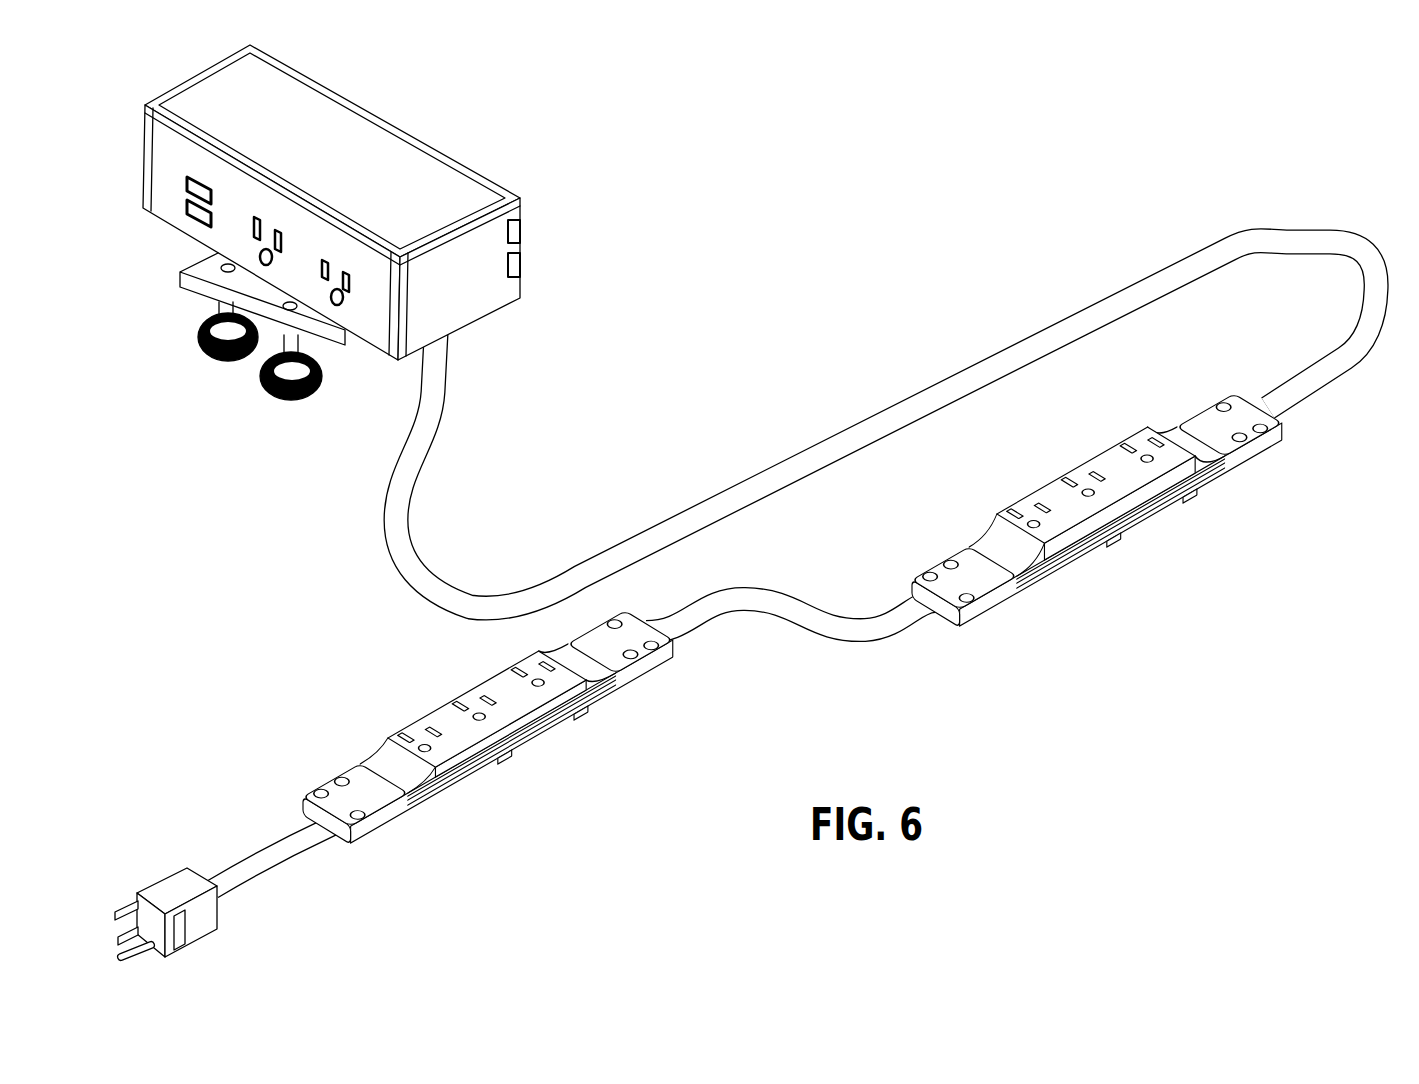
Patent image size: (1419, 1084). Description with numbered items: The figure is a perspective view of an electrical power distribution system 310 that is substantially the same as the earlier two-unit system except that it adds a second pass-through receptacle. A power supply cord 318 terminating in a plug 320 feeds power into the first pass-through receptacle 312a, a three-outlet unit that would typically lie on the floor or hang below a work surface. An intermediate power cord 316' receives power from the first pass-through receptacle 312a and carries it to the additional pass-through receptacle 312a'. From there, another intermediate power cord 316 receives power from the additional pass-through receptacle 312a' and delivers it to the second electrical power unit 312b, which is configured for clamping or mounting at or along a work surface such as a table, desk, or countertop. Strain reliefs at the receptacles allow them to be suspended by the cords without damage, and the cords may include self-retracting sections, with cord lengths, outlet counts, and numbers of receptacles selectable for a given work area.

The electrical power distribution system 310 is at (827, 146).
The first pass-through receptacle 312a is at (488, 735).
The additional pass-through receptacle 312a' is at (1097, 532).
The second electrical power unit 312b is at (478, 132).
The intermediate power cord 316 is at (886, 424).
The intermediate power cord 316' is at (790, 648).
The power supply cord 318 is at (255, 850).
The plug 320 is at (207, 915).